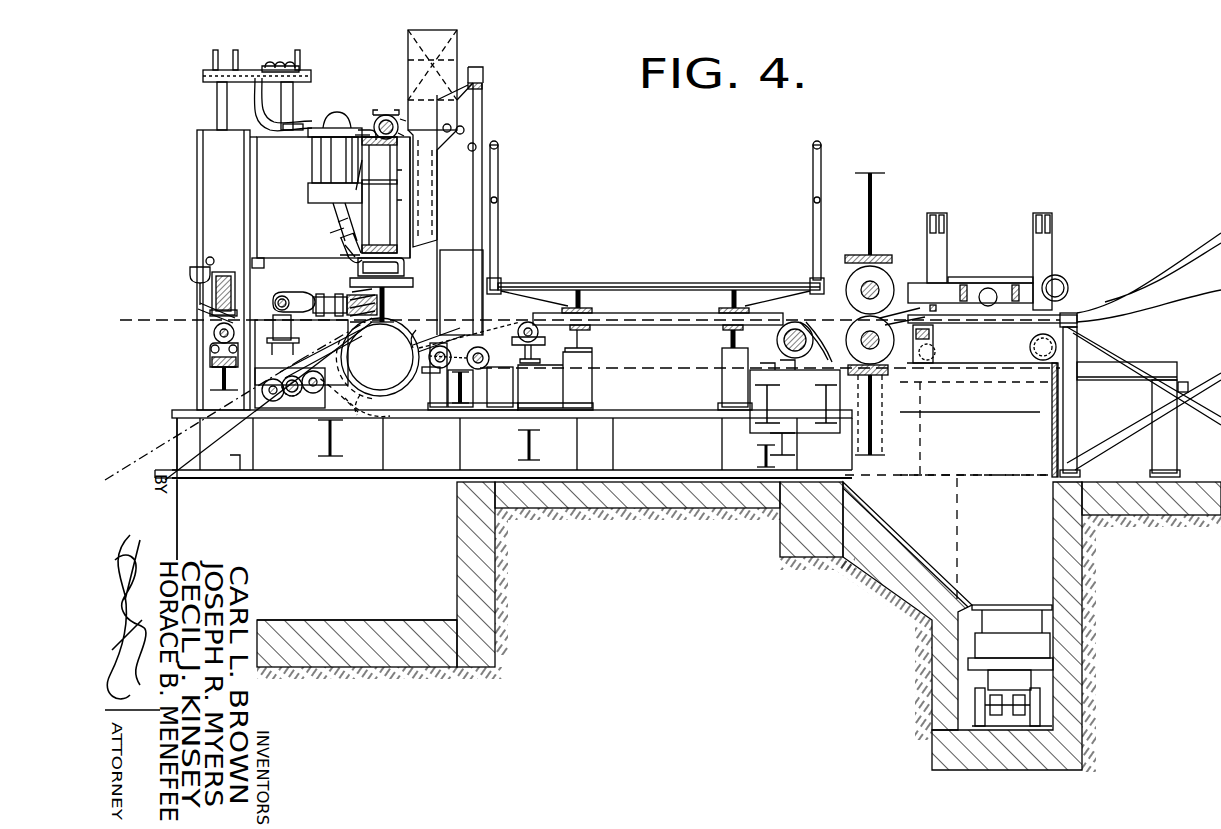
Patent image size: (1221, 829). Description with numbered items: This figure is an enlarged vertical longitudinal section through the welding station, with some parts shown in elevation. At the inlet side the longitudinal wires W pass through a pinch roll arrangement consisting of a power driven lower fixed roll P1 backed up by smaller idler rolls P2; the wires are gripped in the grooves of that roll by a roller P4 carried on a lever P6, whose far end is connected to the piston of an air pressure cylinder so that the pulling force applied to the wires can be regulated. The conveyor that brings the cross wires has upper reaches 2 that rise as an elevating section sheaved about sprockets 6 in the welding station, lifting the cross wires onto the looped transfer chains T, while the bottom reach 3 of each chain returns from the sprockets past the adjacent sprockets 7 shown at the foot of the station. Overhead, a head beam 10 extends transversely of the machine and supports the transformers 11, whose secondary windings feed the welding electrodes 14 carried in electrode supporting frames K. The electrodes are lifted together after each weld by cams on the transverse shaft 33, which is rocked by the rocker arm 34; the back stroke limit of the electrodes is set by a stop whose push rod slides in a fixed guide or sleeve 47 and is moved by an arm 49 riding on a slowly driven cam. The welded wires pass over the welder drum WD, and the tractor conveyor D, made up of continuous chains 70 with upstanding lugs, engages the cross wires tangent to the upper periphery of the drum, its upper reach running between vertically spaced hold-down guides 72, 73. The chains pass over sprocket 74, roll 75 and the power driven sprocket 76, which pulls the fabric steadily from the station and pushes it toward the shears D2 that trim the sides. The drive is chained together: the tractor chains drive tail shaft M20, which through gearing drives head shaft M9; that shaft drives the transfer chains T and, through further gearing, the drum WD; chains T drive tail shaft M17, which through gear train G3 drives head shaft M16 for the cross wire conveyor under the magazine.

The upper reaches of the conveyor 2 is at (122, 462).
The bottom reach of conveyor chain 3 is at (220, 470).
The sprockets 6 is at (315, 380).
The guide roll 7 is at (273, 402).
The head beam 10 is at (378, 170).
The transformers 11 is at (312, 163).
The welding electrodes 14 is at (388, 300).
The shaft 33 is at (386, 115).
The rocker arm 34 is at (370, 112).
The fixed guide or sleeve 47 is at (330, 297).
The arm 49 is at (300, 298).
The continuous chains 70 is at (656, 369).
The hold-down guide 72 is at (652, 310).
The hold-down guide 73 is at (678, 326).
The sprocket 74 is at (482, 366).
The roll 75 is at (526, 322).
The sprocket 76 is at (777, 340).
The cabinet C is at (333, 197).
The tractor conveyor D is at (641, 350).
The shears D2 is at (885, 290).
The gear train G3 is at (310, 400).
The electrode supporting frame K is at (451, 292).
The head shaft M9 is at (440, 350).
The head shaft M16 is at (312, 383).
The tail shaft M17 is at (301, 350).
The tail shaft M20 is at (489, 350).
The lower fixed roll P1 is at (223, 330).
The idler rolls P2 is at (210, 354).
The roller P4 is at (220, 317).
The lever P6 is at (196, 291).
The transfer chains T is at (357, 432).
The longitudinal wires W is at (128, 318).
The welder drum WD is at (410, 355).